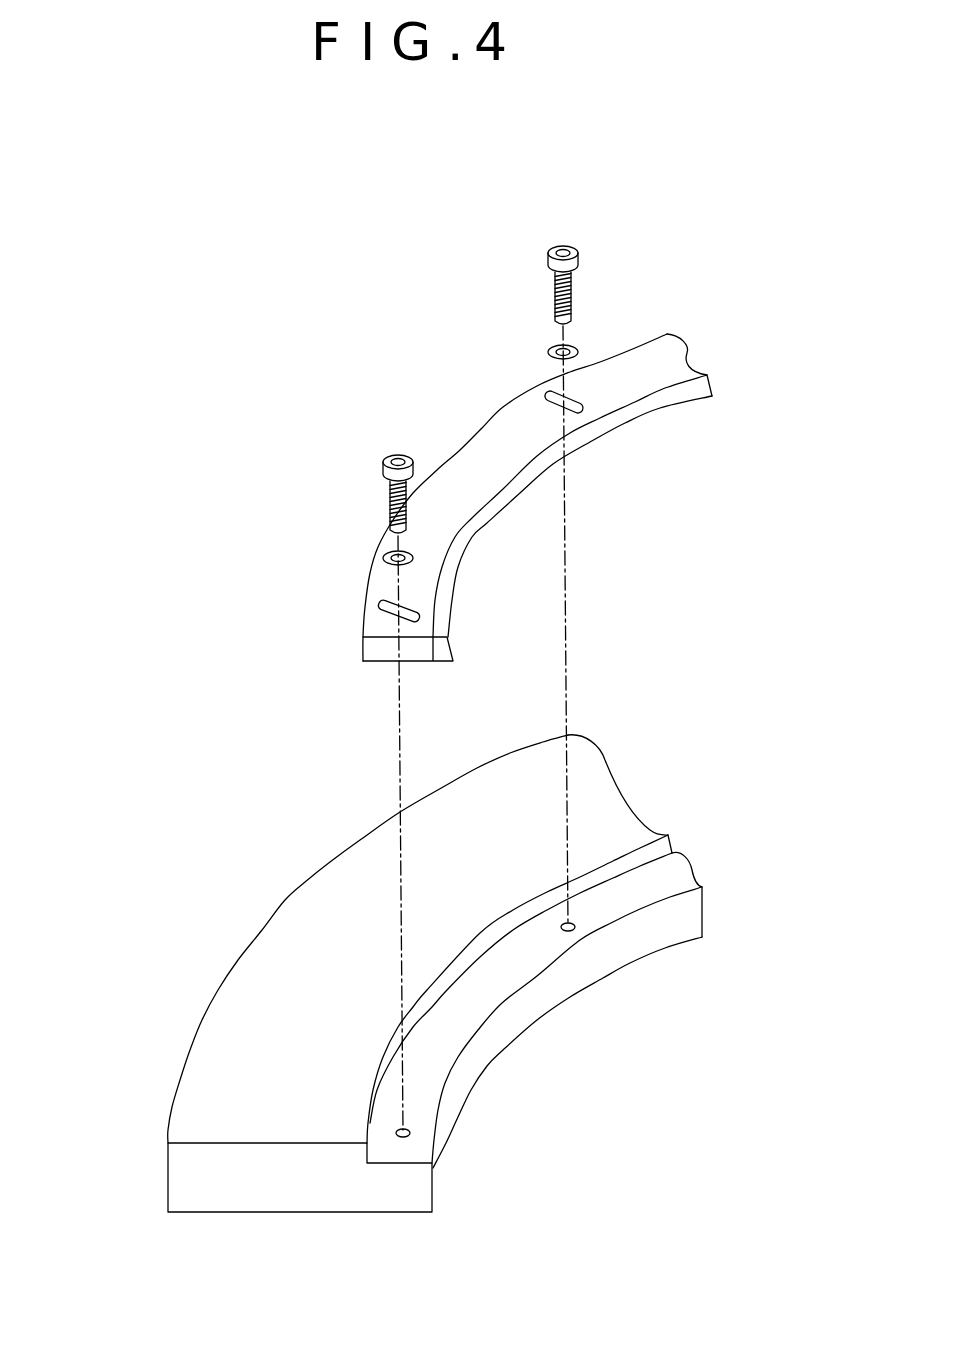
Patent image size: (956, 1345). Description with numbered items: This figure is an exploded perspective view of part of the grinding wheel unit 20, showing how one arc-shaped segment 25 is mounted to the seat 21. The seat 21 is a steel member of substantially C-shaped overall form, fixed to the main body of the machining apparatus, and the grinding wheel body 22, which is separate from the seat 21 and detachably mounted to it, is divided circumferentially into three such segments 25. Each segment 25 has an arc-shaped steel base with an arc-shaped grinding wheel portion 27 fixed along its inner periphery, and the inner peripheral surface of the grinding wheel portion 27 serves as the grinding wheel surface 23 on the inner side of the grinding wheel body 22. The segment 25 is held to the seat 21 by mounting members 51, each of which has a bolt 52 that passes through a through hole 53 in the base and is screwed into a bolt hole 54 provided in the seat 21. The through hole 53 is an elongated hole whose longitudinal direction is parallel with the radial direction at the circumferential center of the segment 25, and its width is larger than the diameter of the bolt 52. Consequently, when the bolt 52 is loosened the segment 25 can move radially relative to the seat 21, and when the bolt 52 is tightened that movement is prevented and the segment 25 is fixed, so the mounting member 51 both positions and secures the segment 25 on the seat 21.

The grinding wheel unit 20 is at (282, 578).
The seat 21 is at (254, 983).
The grinding wheel body 22 is at (645, 338).
The grinding wheel surface 23 is at (500, 518).
The segment 25 is at (482, 430).
The grinding wheel portion 27 is at (443, 663).
The mounting member 51 is at (590, 254).
The bolt 52 is at (546, 258).
The through hole 53 is at (551, 394).
The bolt hole 54 is at (576, 926).